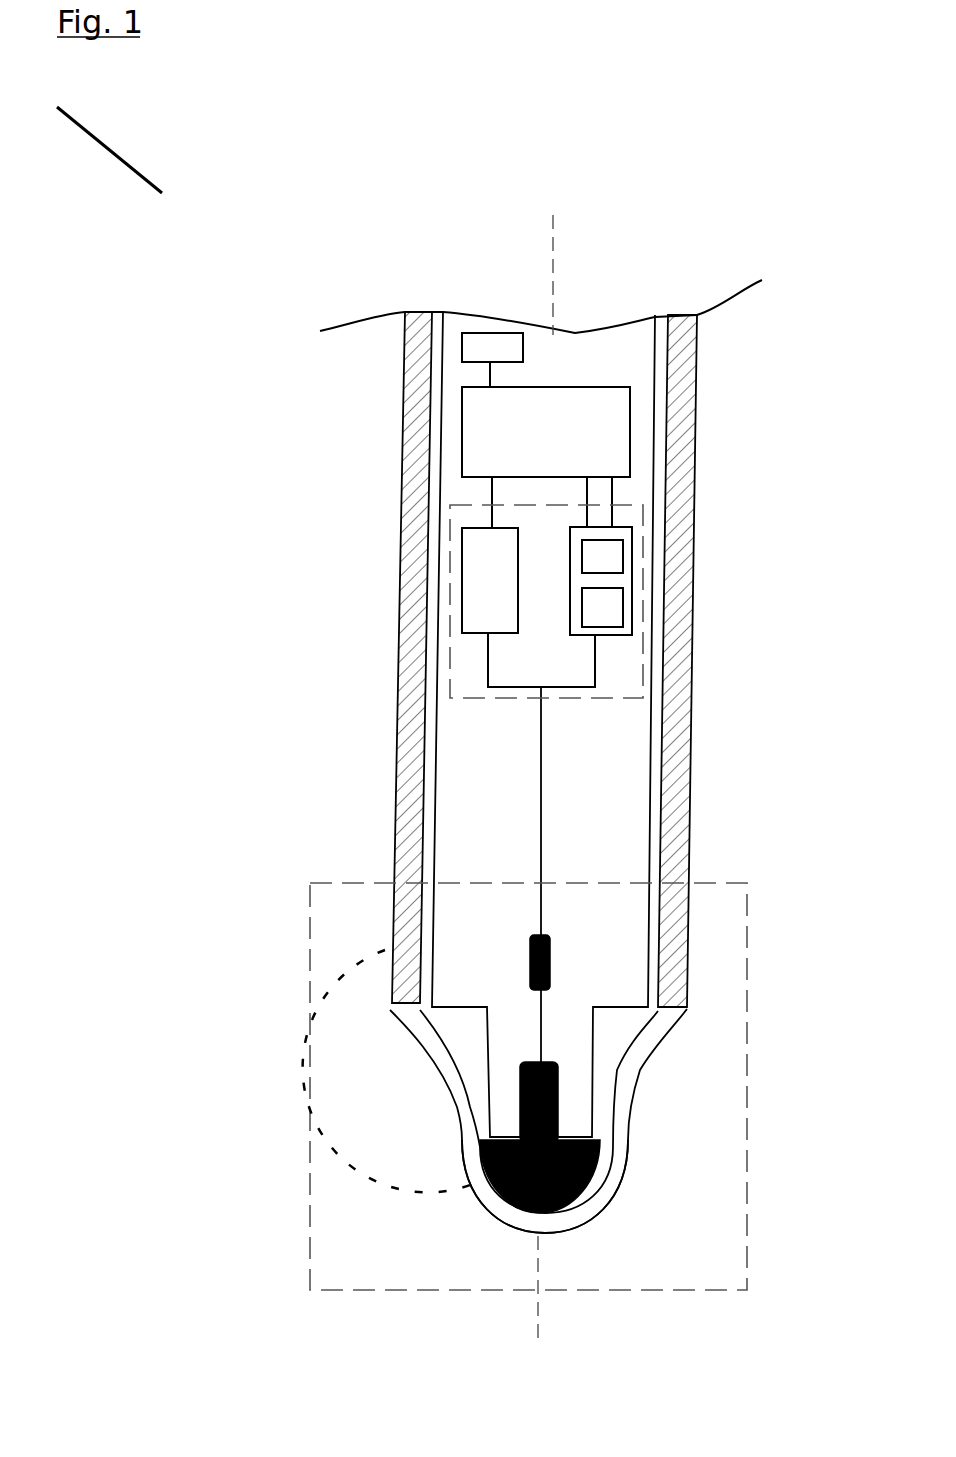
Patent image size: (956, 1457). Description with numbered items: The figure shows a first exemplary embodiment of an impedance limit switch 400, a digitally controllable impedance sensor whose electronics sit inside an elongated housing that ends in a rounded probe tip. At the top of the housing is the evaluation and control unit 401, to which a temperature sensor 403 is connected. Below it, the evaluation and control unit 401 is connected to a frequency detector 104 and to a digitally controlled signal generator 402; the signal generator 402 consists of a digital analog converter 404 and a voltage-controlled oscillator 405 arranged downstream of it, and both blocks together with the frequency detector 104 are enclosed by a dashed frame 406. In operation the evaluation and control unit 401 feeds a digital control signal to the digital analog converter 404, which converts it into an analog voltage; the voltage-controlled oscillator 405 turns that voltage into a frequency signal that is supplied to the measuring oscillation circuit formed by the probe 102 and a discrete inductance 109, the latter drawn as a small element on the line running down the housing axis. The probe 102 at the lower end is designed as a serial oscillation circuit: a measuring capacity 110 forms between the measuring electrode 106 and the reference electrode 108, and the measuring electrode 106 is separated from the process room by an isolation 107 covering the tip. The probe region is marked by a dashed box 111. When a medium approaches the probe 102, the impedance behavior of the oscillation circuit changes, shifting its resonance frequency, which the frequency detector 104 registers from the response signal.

The impedance limit switch 400 is at (268, 293).
The evaluation and control unit 401 is at (546, 457).
The digitally controlled signal generator 402 is at (625, 582).
The temperature sensor 403 is at (492, 360).
The digital analog converter 404 is at (602, 556).
The voltage-controlled oscillator 405 is at (602, 607).
The electronics module 406 is at (582, 668).
The frequency detector 104 is at (480, 575).
The reference electrode 108 is at (675, 933).
The discrete inductance 109 is at (550, 958).
The isolation 107 is at (623, 1090).
The measuring electrode 106 is at (587, 1185).
The probe 102 is at (485, 1217).
The measuring capacity 110 is at (409, 1120).
The sensor head region 111 is at (497, 1252).